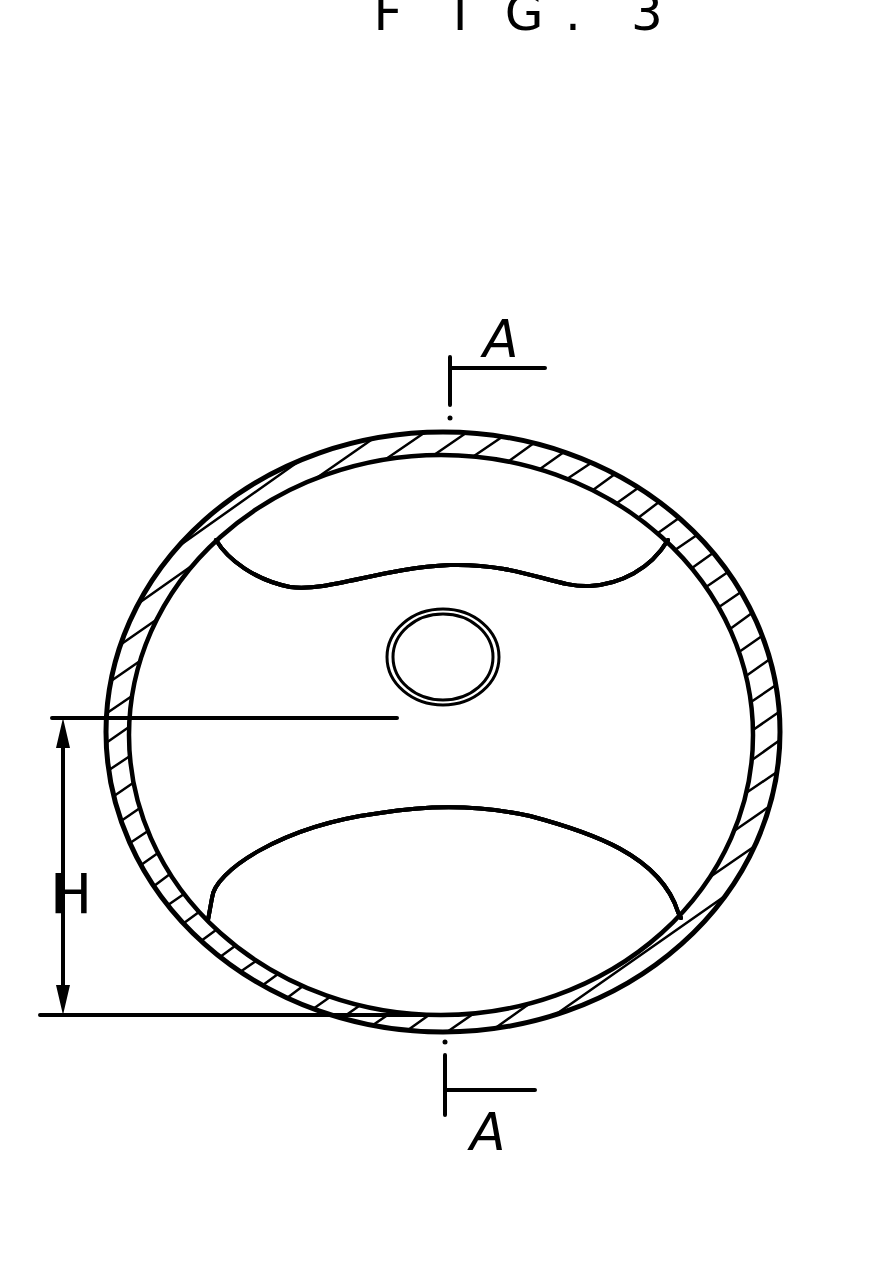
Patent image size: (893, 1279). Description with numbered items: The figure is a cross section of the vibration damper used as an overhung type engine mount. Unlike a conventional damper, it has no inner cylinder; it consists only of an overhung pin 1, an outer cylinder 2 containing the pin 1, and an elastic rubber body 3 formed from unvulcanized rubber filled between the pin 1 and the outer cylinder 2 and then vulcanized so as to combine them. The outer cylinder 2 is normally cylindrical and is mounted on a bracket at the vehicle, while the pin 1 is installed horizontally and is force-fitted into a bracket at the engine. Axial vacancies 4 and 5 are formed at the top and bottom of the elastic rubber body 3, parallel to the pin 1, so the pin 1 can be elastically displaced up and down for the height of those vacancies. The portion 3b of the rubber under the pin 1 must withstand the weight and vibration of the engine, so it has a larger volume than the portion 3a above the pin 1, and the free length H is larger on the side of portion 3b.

The overhung pin 1 is at (467, 663).
The outer cylinder 2 is at (627, 497).
The elastic rubber body 3 is at (690, 697).
The portion of the elastic rubber body above the pin 3a is at (457, 593).
The portion of the elastic rubber body under the pin 3b is at (457, 770).
The axial vacancy 4 is at (323, 507).
The axial vacancy 5 is at (567, 957).